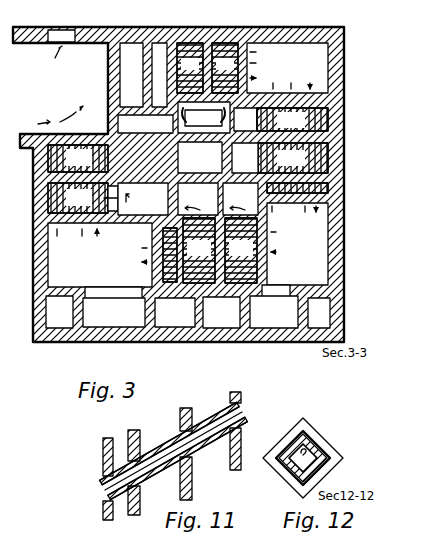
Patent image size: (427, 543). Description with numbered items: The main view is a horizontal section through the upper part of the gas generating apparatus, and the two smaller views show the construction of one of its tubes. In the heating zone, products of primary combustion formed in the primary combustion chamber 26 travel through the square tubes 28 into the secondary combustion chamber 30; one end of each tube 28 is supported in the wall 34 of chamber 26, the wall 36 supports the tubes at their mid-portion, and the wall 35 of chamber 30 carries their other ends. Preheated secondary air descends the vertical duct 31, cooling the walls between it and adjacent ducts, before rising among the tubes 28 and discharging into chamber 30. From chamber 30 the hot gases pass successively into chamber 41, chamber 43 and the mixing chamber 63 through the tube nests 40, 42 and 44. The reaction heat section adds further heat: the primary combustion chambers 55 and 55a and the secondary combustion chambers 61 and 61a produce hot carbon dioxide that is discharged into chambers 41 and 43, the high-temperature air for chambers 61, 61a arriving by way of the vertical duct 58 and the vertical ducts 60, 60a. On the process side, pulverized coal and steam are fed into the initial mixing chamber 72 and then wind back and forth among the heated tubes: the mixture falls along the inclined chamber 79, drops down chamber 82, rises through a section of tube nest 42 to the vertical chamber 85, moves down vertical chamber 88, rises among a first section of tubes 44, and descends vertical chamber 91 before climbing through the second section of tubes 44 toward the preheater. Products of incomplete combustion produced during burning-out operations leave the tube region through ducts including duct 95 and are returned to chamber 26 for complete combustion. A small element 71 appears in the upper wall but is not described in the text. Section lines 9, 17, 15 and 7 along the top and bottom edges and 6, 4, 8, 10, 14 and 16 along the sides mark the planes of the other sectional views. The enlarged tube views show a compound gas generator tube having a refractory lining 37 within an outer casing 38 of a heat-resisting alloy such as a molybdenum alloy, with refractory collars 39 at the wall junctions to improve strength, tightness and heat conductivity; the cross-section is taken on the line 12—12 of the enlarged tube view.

In FIG. 3, the inlet opening 71 is at (61, 37).
In FIG. 3, the mixing chamber 63 is at (60, 88).
In FIG. 3, the wall of chamber 30 35 is at (65, 134).
In FIG. 3, the wall 36 is at (50, 176).
In FIG. 3, the wall of chamber 26 34 is at (176, 40).
In FIG. 3, the primary combustion chamber 26 is at (131, 75).
In FIG. 3, the tubes 28 is at (207, 68).
In FIG. 3, the secondary combustion chamber 30 is at (287, 68).
In FIG. 3, the duct 95 is at (145, 124).
In FIG. 3, the initial mixing chamber 72 is at (204, 117).
In FIG. 3, the chamber 79 is at (264, 120).
In FIG. 3, the tube nest 40 is at (292, 140).
In FIG. 3, the vertical duct 31 is at (200, 157).
In FIG. 3, the chamber 82 is at (266, 158).
In FIG. 3, the tube nest 44 is at (78, 179).
In FIG. 3, the vertical chamber 91 is at (143, 199).
In FIG. 3, the vertical chamber 88 is at (198, 199).
In FIG. 3, the vertical chamber 85 is at (240, 199).
In FIG. 3, the vertical duct 58 is at (162, 234).
In FIG. 3, the chamber 43 is at (100, 255).
In FIG. 3, the tube nest 42 is at (220, 250).
In FIG. 3, the chamber 41 is at (297, 244).
In FIG. 3, the vertical duct 60a is at (59, 312).
In FIG. 3, the secondary combustion chamber 61a is at (114, 312).
In FIG. 3, the primary combustion chamber 55a is at (175, 312).
In FIG. 3, the primary combustion chamber 55 is at (221, 312).
In FIG. 3, the secondary combustion chamber 61 is at (274, 312).
In FIG. 3, the vertical duct 60 is at (319, 313).
In FIG. 3, the section line 9- 9 is at (76, 8).
In FIG. 3, the section line 17- 17 is at (140, 6).
In FIG. 3, the section line 15- 15 is at (233, 8).
In FIG. 3, the section line 7- 7 is at (295, 8).
In FIG. 3, the section line 6- 6 is at (0, 76).
In FIG. 3, the section line 4- 4 is at (0, 123).
In FIG. 3, the section line 8- 8 is at (0, 253).
In FIG. 3, the section line 10- 10 is at (0, 313).
In FIG. 3, the section line 14- 14 is at (350, 124).
In FIG. 3, the section line 16- 16 is at (350, 194).
In FIG. 11, the section line 12— 12 is at (155, 423).
In FIG. 11, the refractory collars 39 is at (103, 484).
In FIG. 12, the refractory collars 39 is at (286, 436).
In FIG. 12, the outer casing 38 is at (289, 474).
In FIG. 12, the lining 37 is at (307, 452).